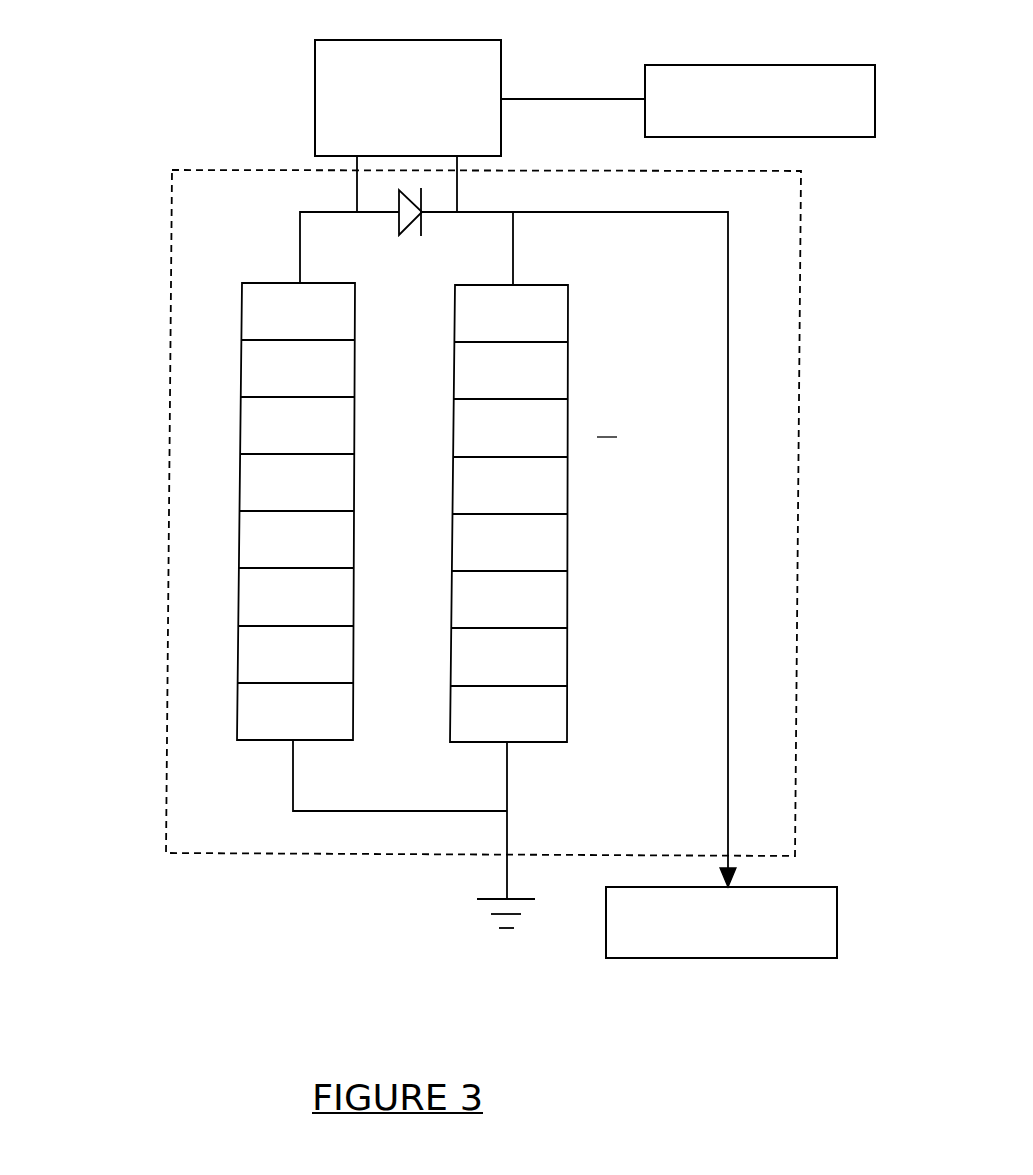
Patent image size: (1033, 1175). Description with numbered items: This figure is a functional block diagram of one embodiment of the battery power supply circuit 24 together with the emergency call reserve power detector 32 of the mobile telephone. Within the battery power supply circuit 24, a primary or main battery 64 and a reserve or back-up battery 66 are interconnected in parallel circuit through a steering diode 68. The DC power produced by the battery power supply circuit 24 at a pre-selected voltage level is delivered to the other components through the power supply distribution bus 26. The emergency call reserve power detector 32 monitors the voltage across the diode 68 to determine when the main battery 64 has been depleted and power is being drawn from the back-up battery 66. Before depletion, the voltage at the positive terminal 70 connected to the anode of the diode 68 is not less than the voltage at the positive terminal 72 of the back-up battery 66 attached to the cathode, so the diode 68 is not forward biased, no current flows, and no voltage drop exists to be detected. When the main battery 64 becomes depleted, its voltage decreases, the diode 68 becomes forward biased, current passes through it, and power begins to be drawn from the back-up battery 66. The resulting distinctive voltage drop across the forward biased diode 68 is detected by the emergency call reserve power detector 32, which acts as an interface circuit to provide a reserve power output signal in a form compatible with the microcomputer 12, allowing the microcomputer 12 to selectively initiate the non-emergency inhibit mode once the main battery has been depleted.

The microcomputer 12 is at (699, 82).
The battery power supply circuit 24 is at (539, 513).
The power supply distribution bus 26 is at (763, 900).
The emergency call reserve power detector 32 is at (455, 82).
The main battery 64 is at (555, 513).
The back-up battery 66 is at (213, 511).
The diode 68 is at (399, 235).
The positive terminal 70 is at (672, 517).
The positive terminal 72 is at (221, 203).